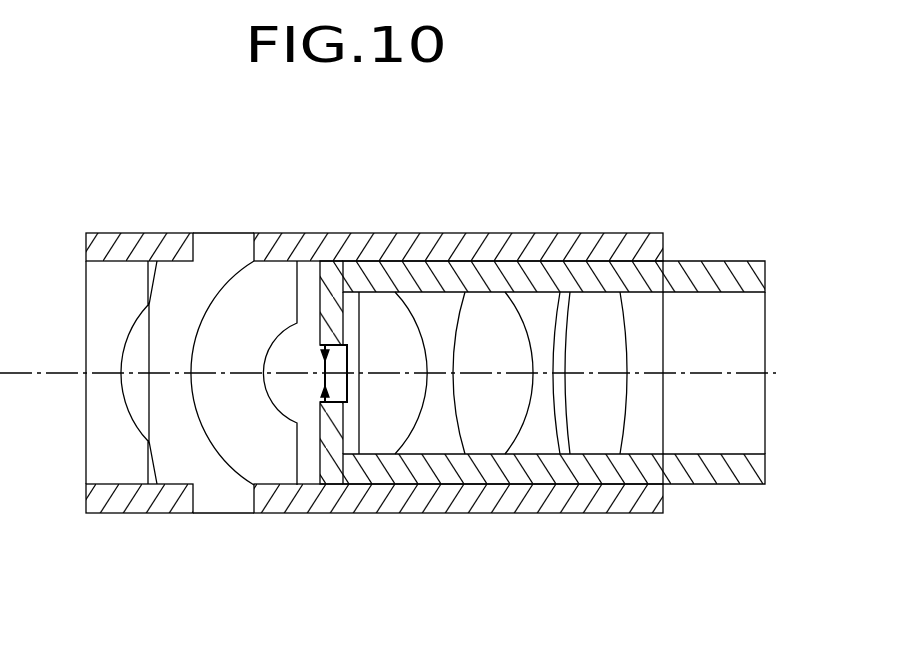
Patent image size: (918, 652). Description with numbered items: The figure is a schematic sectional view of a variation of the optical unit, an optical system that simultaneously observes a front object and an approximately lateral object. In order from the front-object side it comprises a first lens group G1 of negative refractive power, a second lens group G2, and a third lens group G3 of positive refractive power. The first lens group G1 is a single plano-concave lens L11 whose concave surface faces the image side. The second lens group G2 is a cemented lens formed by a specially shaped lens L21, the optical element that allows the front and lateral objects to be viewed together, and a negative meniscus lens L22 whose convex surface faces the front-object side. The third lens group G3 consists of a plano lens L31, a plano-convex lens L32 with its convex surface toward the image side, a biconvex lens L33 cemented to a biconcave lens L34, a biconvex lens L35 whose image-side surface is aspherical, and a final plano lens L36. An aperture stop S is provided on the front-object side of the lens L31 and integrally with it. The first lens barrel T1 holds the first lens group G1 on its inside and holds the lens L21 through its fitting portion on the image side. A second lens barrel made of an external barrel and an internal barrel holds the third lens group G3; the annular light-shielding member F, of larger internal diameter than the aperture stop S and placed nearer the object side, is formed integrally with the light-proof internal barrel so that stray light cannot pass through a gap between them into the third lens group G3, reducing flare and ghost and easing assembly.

The first lens group G1 is at (121, 314).
The second lens group G2 is at (224, 314).
The third lens group G3 is at (548, 299).
The lens L11 is at (123, 293).
The lens L21 is at (221, 257).
The lens L22 is at (277, 335).
The lens L31 is at (337, 300).
The lens L32 is at (378, 312).
The lens L33 is at (483, 310).
The lens L34 is at (532, 308).
The lens L35 is at (595, 310).
The lens L36 is at (698, 319).
The first lens barrel T1 is at (153, 503).
The light-shielding member F is at (332, 442).
The aperture stop S is at (349, 402).